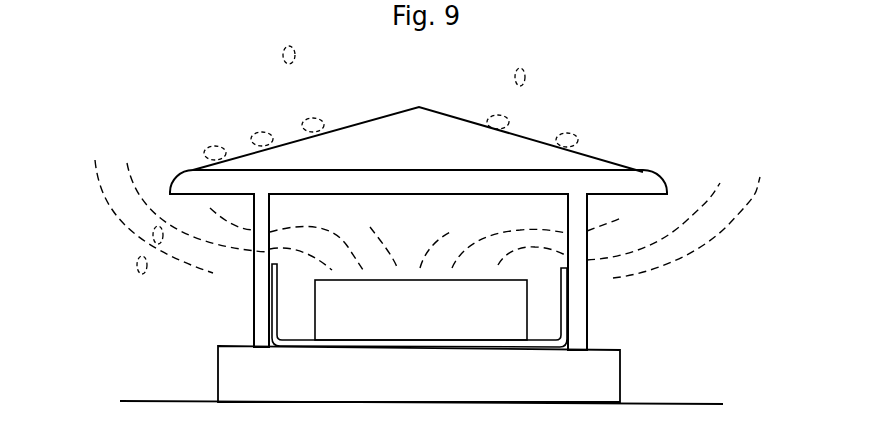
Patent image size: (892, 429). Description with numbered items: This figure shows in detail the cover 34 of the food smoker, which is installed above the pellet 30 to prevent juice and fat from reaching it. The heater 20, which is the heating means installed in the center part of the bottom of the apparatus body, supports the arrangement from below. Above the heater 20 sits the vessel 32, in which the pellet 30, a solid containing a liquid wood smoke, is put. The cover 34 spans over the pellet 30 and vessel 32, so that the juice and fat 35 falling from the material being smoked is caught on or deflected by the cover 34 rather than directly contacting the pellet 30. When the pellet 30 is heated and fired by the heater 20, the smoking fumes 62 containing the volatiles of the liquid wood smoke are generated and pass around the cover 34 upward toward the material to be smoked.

The heater 20 is at (617, 377).
The pellet 30 is at (518, 313).
The vessel 32 is at (272, 308).
The cover 34 is at (598, 160).
The juice and fat 35 is at (530, 77).
The smoking fumes 62 is at (727, 223).